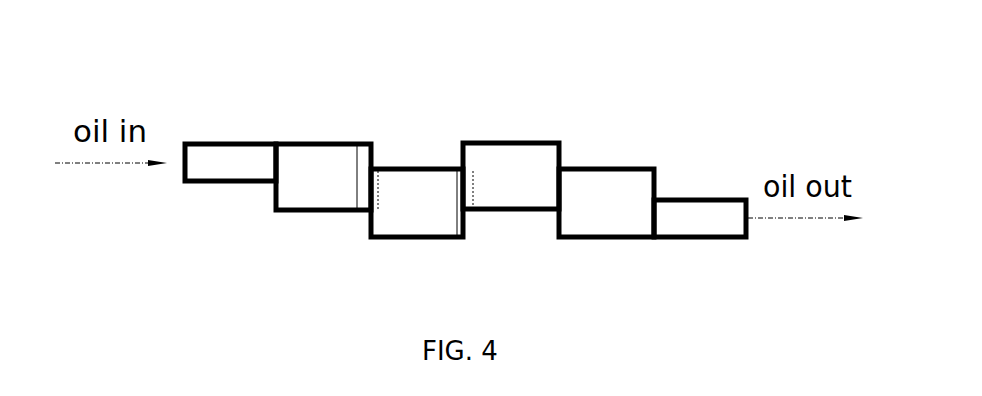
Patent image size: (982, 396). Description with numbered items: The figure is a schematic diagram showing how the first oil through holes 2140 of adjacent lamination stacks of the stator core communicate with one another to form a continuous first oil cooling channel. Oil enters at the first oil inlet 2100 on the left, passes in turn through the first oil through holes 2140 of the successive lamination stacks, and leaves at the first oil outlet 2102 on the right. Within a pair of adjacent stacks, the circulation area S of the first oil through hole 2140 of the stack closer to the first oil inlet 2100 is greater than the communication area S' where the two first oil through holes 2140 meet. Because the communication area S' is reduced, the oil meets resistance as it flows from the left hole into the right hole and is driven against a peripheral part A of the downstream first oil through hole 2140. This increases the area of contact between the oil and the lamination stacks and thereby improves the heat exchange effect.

The first oil inlet 2100 is at (163, 193).
The first oil through hole 2140 is at (396, 175).
The first oil outlet 2102 is at (764, 239).
The peripheral part A is at (447, 181).
The circulation area S is at (395, 190).
The communication area S' is at (440, 190).